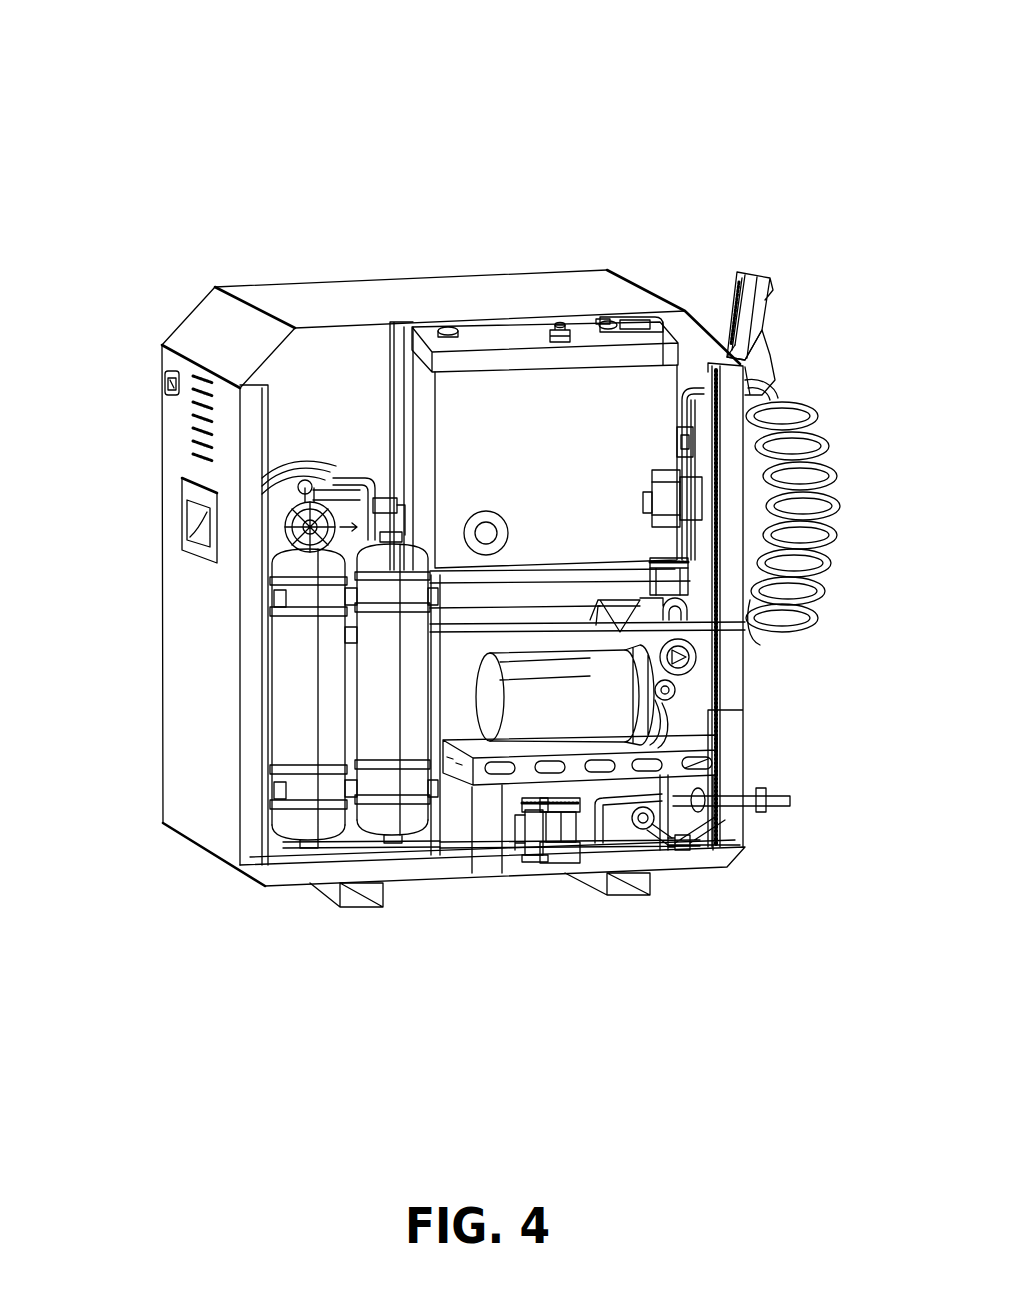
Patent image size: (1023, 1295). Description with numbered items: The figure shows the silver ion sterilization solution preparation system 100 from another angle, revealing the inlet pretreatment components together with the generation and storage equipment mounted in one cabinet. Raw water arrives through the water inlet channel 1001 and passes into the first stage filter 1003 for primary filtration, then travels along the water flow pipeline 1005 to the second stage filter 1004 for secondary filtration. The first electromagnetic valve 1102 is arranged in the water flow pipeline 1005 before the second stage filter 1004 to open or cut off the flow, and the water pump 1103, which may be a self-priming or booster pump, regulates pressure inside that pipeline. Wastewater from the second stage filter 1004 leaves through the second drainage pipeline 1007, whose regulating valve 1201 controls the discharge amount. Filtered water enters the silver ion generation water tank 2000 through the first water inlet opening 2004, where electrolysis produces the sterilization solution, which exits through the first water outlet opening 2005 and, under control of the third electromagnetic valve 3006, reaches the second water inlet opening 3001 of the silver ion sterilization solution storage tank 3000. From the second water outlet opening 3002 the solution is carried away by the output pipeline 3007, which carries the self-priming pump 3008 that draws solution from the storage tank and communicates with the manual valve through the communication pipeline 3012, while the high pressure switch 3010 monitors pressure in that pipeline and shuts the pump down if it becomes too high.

The silver ion sterilization solution preparation system 100 is at (180, 125).
The water flow pipeline 1005 is at (330, 493).
The first electromagnetic valve 1102 is at (300, 490).
The second stage filter 1004 is at (307, 680).
The first stage filter 1003 is at (393, 740).
The first water inlet opening 2004 is at (600, 317).
The silver ion generation water tank 2000 is at (580, 430).
The output pipeline 3007 is at (740, 363).
The high pressure switch 3010 is at (745, 372).
The silver ion sterilization solution storage tank 3000 is at (583, 572).
The first water outlet opening 2005 is at (542, 620).
The third electromagnetic valve 3006 is at (578, 622).
The second water inlet opening 3001 is at (640, 603).
The self-priming pump 3008 is at (545, 685).
The communication pipeline 3012 is at (762, 598).
The water inlet channel 1001 is at (780, 800).
The second drainage pipeline 1007 is at (767, 808).
The second water outlet opening 3002 is at (642, 830).
The regulating valve 1201 is at (525, 850).
The water pump 1103 is at (562, 850).